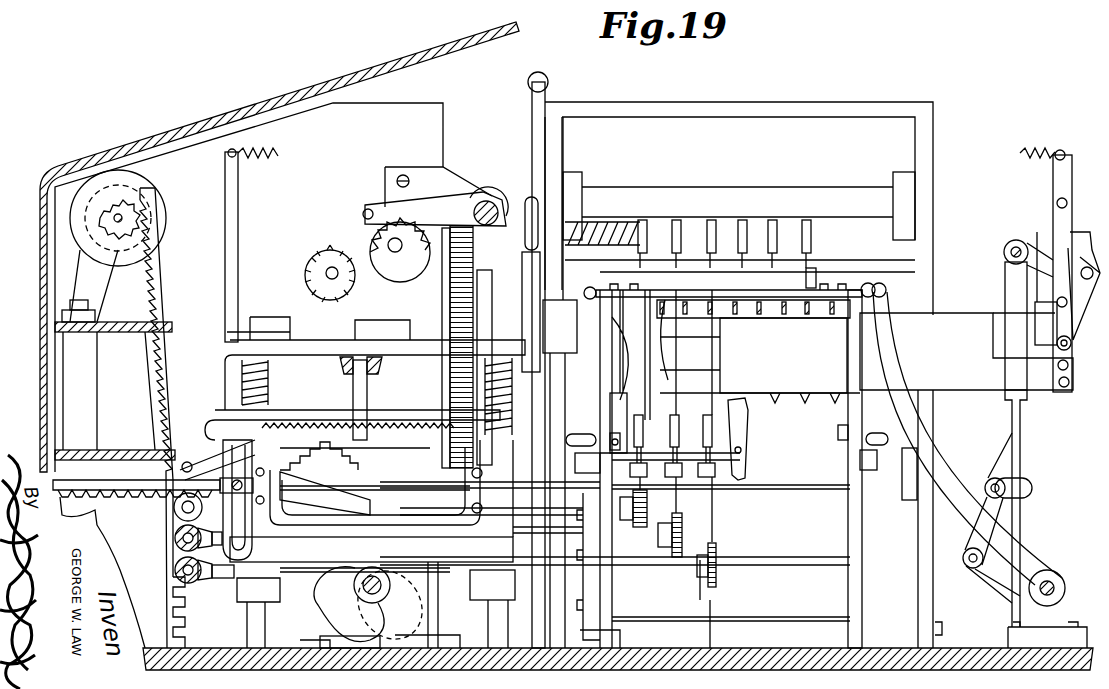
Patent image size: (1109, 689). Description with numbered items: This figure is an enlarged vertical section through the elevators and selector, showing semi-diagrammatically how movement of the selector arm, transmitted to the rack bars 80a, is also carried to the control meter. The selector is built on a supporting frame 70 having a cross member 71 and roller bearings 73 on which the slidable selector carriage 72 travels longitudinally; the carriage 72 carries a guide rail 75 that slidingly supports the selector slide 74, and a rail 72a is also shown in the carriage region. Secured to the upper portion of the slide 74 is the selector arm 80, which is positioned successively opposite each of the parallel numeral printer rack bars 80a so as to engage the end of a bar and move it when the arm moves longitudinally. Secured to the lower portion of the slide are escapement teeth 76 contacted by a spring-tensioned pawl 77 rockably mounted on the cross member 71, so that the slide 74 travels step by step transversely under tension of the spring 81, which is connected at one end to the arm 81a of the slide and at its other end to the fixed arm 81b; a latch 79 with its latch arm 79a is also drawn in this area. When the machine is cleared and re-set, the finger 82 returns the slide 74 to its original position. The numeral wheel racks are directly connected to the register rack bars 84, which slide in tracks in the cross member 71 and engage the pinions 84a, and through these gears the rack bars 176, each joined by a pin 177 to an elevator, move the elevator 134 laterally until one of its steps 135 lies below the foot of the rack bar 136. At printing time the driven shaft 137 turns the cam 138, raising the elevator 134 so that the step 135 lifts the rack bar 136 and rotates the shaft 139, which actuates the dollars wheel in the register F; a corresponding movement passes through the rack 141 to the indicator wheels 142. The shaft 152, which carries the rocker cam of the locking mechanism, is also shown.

The supporting frame 70 is at (612, 627).
The cross member 71 is at (808, 478).
The selector carriage 72 is at (618, 403).
The rail 72a is at (875, 290).
The roller bearings 73 is at (580, 434).
The selector slide 74 is at (976, 378).
The guide rail 75 is at (678, 372).
The escapement teeth 76 is at (797, 393).
The spring-tensioned pawl 77 is at (742, 404).
The latch 79 is at (717, 400).
The latch arm 79a is at (712, 395).
The selector arm 80 is at (812, 274).
The numeral printer rack bars 80a is at (800, 250).
The spring 81 is at (278, 152).
The arm of slide 81a is at (1053, 190).
The fixed arm 81b is at (236, 236).
The finger 82 is at (890, 340).
The register rack bars 84 is at (708, 500).
The pinions 84a is at (703, 562).
The elevator 134 is at (397, 530).
The steps 135 is at (312, 452).
The rack bar 136 is at (355, 400).
The driven shaft 137 is at (358, 594).
The cam 138 is at (312, 628).
The shaft 139 is at (322, 275).
The rack 141 is at (152, 280).
The indicator wheels 142 is at (160, 198).
The shaft 152 is at (497, 200).
The rack bars 176 is at (153, 563).
The pin 177 is at (186, 432).
The register F is at (456, 102).